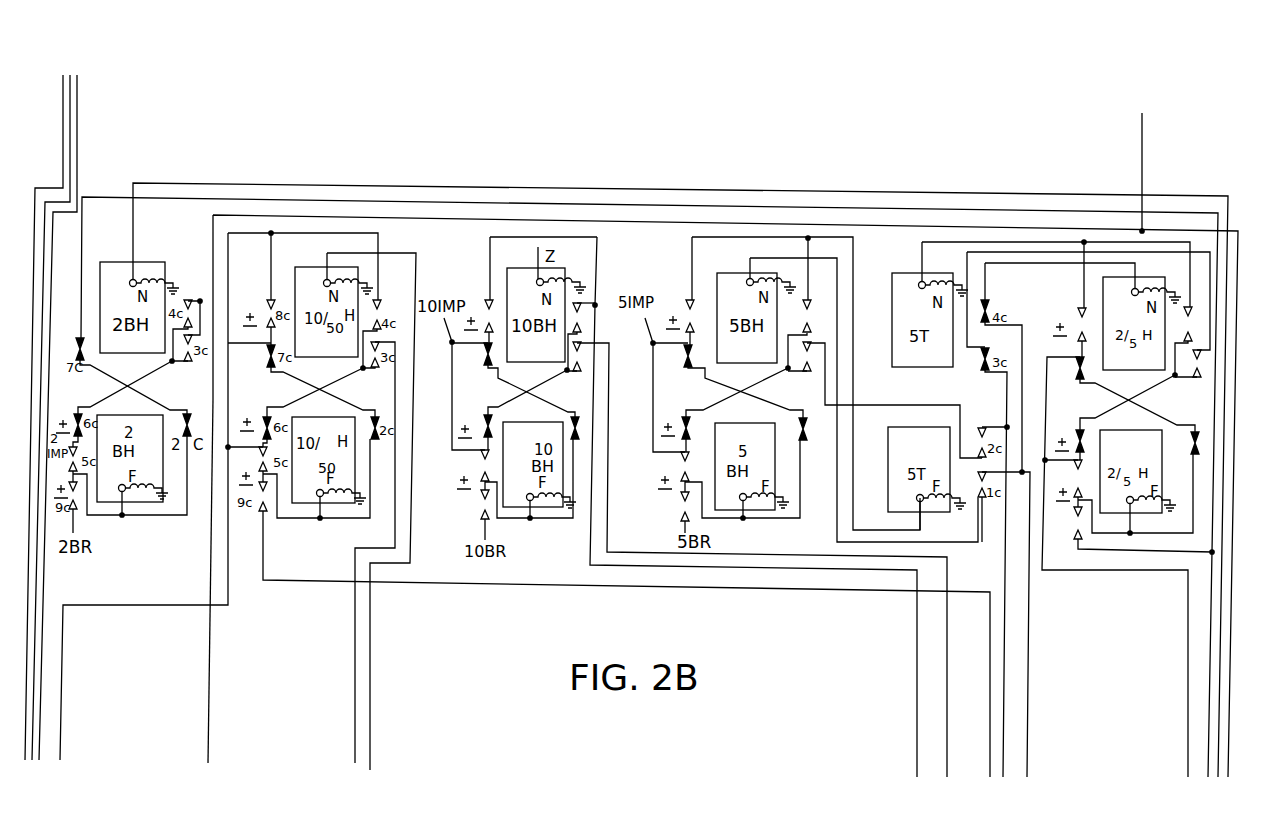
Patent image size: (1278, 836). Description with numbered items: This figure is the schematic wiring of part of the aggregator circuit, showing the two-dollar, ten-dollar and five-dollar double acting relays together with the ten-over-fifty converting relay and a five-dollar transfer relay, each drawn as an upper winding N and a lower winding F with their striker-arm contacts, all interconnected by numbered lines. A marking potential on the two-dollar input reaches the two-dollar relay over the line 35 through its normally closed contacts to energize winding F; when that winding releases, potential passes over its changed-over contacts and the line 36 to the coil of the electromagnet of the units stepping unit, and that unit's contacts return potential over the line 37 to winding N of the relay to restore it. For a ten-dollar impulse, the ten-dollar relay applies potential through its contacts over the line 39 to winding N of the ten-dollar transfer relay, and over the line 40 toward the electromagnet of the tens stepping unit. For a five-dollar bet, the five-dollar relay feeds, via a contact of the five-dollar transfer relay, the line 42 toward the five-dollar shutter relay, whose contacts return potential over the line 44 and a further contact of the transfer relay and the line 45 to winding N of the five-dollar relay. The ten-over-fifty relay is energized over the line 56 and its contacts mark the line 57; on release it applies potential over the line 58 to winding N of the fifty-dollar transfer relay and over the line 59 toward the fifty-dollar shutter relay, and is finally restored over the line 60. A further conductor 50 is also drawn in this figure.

The line 35 is at (710, 205).
The line 36 is at (252, 214).
The line 37 is at (943, 196).
The line 39 is at (756, 569).
The line 40 is at (947, 755).
The line 42 is at (1003, 751).
The line 44 is at (1027, 770).
The line 45 is at (830, 541).
The conductor 50 is at (1188, 770).
The line 56 is at (62, 710).
The line 57 is at (989, 678).
The line 58 is at (210, 715).
The line 59 is at (354, 715).
The line 60 is at (370, 715).